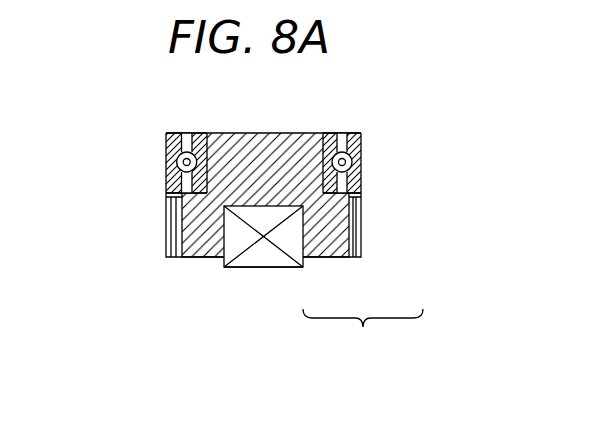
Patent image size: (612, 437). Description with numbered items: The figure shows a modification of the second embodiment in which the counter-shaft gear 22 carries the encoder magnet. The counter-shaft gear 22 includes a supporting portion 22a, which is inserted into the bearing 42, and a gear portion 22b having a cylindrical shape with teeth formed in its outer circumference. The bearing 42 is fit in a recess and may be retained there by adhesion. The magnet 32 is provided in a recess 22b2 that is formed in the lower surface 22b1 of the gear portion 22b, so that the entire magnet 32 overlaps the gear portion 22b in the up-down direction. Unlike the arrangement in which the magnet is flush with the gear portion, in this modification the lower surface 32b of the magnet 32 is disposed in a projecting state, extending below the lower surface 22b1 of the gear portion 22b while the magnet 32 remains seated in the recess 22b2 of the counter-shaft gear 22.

The counter-shaft gear 22 is at (363, 336).
The supporting portion 22a is at (315, 175).
The gear portion 22b is at (322, 240).
The lower surface 22b1 is at (189, 258).
The recess 22b2 is at (297, 233).
The magnet 32 is at (250, 207).
The lower surface 32b is at (243, 268).
The bearing 42 is at (174, 186).